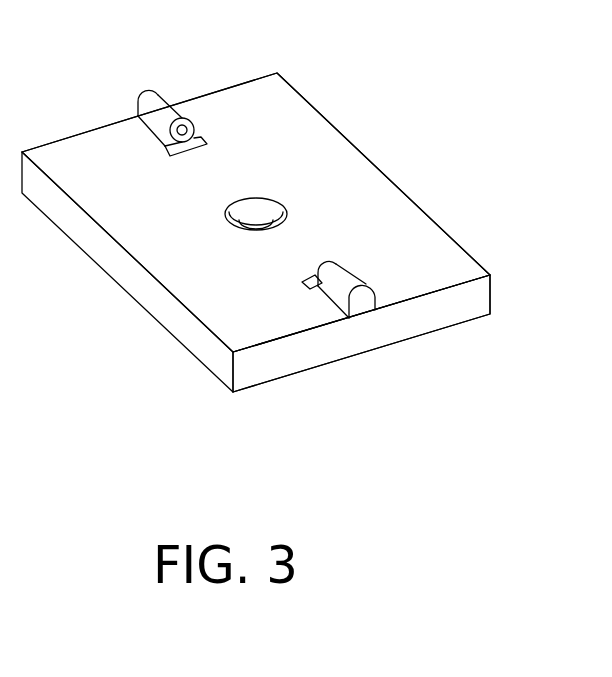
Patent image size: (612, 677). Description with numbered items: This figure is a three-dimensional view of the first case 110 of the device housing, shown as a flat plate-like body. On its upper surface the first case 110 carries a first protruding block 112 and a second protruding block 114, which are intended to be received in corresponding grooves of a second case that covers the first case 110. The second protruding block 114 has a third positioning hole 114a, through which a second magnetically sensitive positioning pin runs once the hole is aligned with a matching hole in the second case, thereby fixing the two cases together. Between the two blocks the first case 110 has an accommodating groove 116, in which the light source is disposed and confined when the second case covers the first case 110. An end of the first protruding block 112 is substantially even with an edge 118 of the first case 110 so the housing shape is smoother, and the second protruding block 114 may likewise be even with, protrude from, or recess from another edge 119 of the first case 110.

The first case 110 is at (410, 225).
The first protruding block 112 is at (342, 278).
The second protruding block 114 is at (153, 97).
The third positioning hole 114a is at (186, 131).
The accommodating groove 116 is at (250, 202).
The edge 118 is at (309, 349).
The edge 119 is at (80, 132).